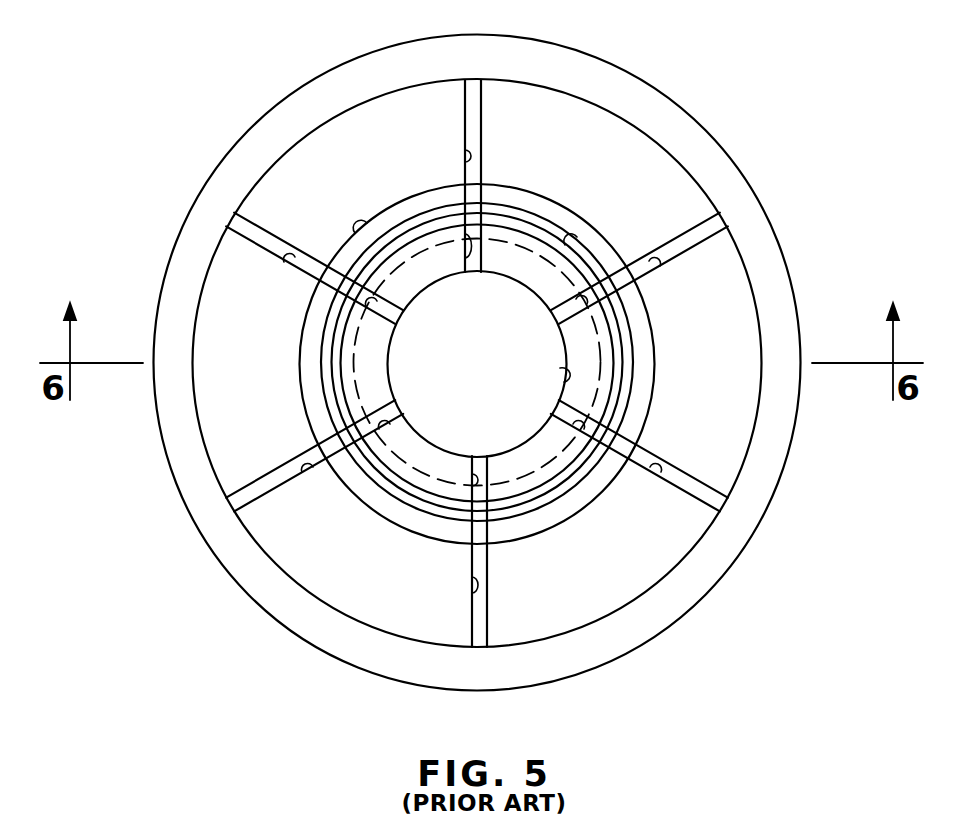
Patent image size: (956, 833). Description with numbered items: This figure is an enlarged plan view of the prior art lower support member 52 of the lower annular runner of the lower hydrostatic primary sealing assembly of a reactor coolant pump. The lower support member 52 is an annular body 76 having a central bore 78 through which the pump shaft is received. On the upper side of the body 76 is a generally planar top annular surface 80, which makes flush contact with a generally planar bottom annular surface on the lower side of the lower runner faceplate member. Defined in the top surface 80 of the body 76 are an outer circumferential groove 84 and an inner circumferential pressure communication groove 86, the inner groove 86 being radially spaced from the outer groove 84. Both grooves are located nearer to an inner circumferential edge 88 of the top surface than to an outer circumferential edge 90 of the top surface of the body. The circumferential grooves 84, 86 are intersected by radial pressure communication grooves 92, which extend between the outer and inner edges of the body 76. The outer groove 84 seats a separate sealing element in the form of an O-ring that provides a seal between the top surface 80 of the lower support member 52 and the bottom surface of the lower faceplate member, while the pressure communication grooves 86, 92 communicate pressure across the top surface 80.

The lower support member 52 is at (744, 140).
The annular body 76 is at (602, 52).
The central bore 78 is at (412, 383).
The top annular surface 80 is at (362, 592).
The outer circumferential groove 84 is at (358, 228).
The inner circumferential pressure communication groove 86 is at (569, 242).
The inner circumferential edge 88 is at (570, 377).
The outer circumferential edge 90 is at (608, 620).
The radial pressure communication grooves 92 is at (466, 238).